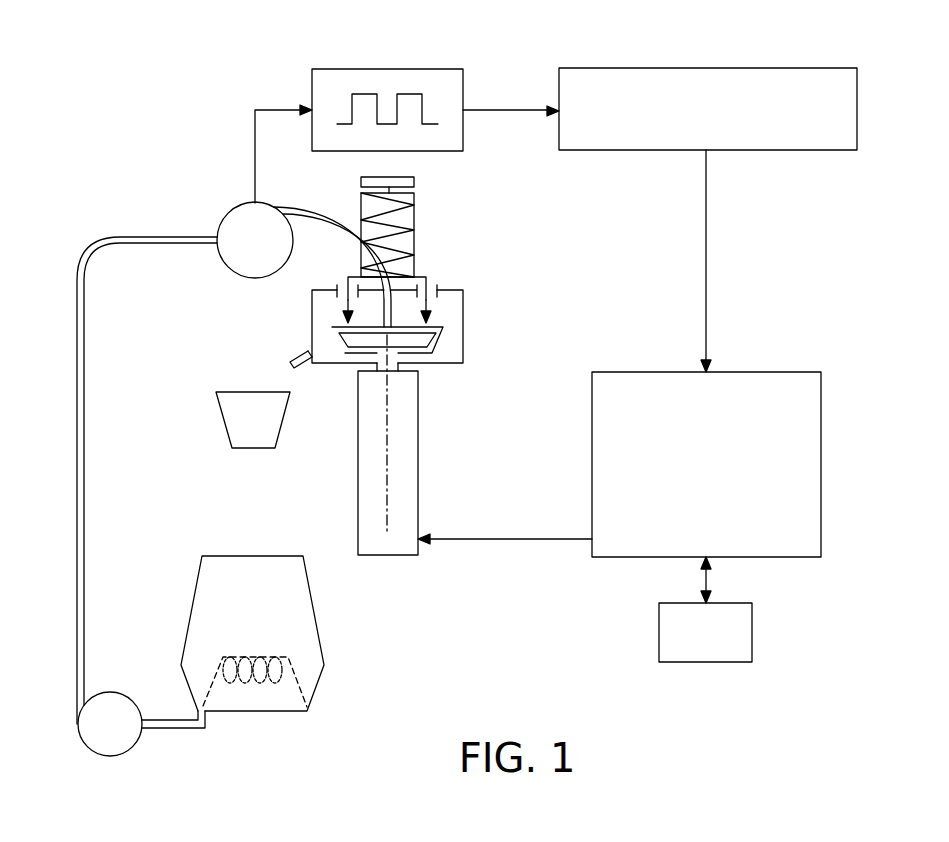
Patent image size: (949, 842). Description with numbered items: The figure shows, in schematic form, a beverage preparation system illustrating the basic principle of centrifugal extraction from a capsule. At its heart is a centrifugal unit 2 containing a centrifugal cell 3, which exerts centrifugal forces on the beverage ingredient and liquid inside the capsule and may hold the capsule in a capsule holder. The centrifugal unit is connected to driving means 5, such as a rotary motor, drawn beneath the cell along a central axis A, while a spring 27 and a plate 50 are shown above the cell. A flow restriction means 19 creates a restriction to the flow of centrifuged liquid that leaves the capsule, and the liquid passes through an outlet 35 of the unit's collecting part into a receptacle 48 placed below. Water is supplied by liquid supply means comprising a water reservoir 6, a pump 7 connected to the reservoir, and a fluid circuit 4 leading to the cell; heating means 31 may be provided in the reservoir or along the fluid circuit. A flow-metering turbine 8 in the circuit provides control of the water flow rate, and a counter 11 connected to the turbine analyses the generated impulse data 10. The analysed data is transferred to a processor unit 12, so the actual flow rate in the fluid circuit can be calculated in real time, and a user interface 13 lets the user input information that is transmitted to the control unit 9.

The centrifugal unit 2 is at (450, 363).
The centrifugal cell 3 is at (447, 348).
The fluid circuit 4 is at (147, 235).
The driving means 5 is at (388, 555).
The water reservoir 6 is at (324, 655).
The pump 7 is at (110, 757).
The flow-metering turbine 8 is at (240, 210).
The control unit 9 is at (875, 193).
The impulse data 10 is at (340, 69).
The counter 11 is at (857, 114).
The processor unit 12 is at (821, 475).
The user interface 13 is at (752, 637).
The flow restriction means 19 is at (440, 292).
The spring 27 is at (414, 217).
The heating means 31 is at (210, 690).
The outlet 35 is at (296, 358).
The receptacle 48 is at (220, 421).
The stop plate 50 is at (432, 181).
The axis A is at (390, 480).